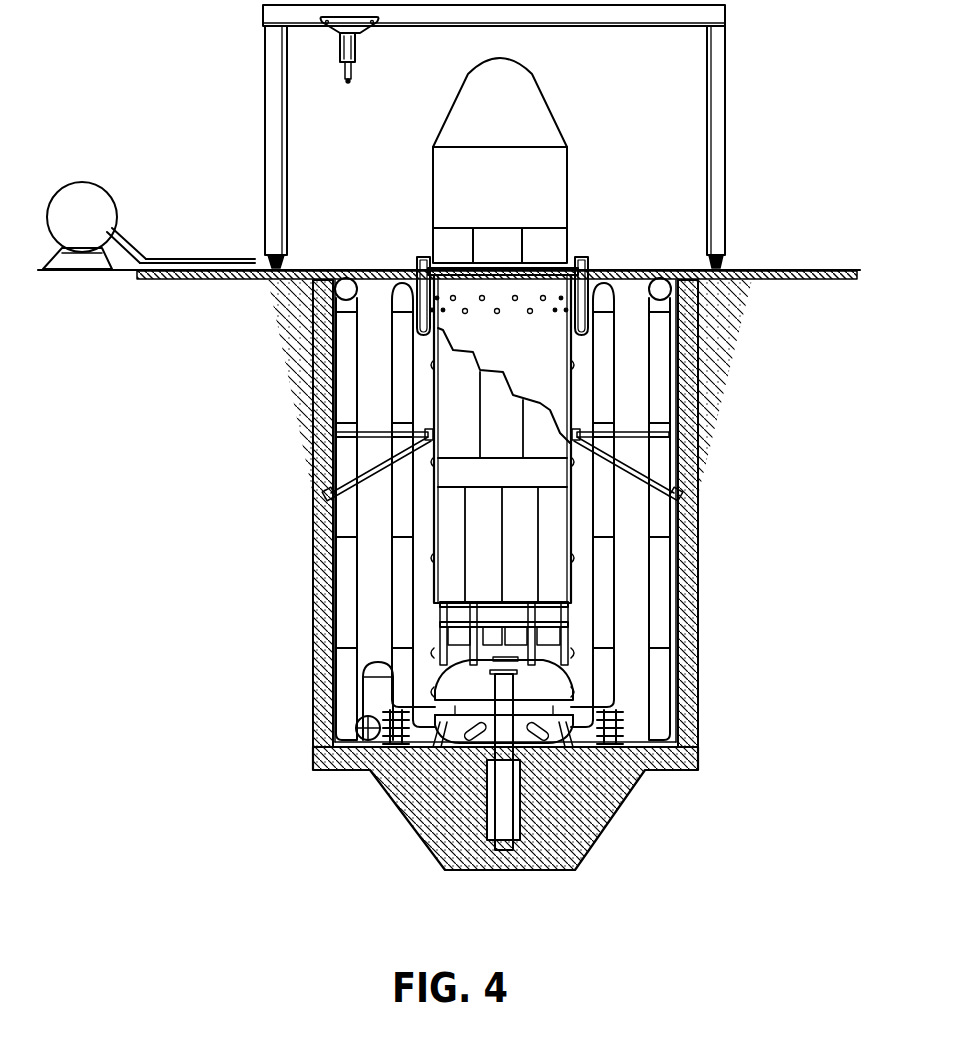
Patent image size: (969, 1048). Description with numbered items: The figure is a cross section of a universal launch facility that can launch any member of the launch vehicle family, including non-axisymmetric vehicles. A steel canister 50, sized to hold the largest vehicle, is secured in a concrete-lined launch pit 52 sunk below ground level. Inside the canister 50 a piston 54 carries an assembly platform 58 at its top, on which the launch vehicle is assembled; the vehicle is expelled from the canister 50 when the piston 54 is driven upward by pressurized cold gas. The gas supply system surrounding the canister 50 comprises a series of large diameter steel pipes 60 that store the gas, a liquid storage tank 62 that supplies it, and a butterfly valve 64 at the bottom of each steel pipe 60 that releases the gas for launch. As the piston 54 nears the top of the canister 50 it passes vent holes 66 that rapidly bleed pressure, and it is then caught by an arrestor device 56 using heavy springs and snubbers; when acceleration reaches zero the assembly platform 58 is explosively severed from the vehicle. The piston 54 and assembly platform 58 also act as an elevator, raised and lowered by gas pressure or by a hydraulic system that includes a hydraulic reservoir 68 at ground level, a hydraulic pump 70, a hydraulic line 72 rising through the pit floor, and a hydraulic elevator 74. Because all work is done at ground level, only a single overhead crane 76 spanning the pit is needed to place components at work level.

The steel canister 50 is at (573, 400).
The concrete-lined launch pit 52 is at (700, 503).
The piston 54 is at (513, 693).
The arrestor device 56 is at (577, 266).
The assembly platform 58 is at (565, 630).
The steel pipes 60 is at (390, 388).
The liquid storage tank 62 is at (373, 662).
The butterfly valve 64 is at (385, 712).
The vent holes 66 is at (465, 310).
The hydraulic reservoir 68 is at (113, 205).
The hydraulic pump 70 is at (355, 725).
The hydraulic line 72 is at (495, 812).
The hydraulic elevator 74 is at (515, 800).
The overhead crane 76 is at (727, 200).